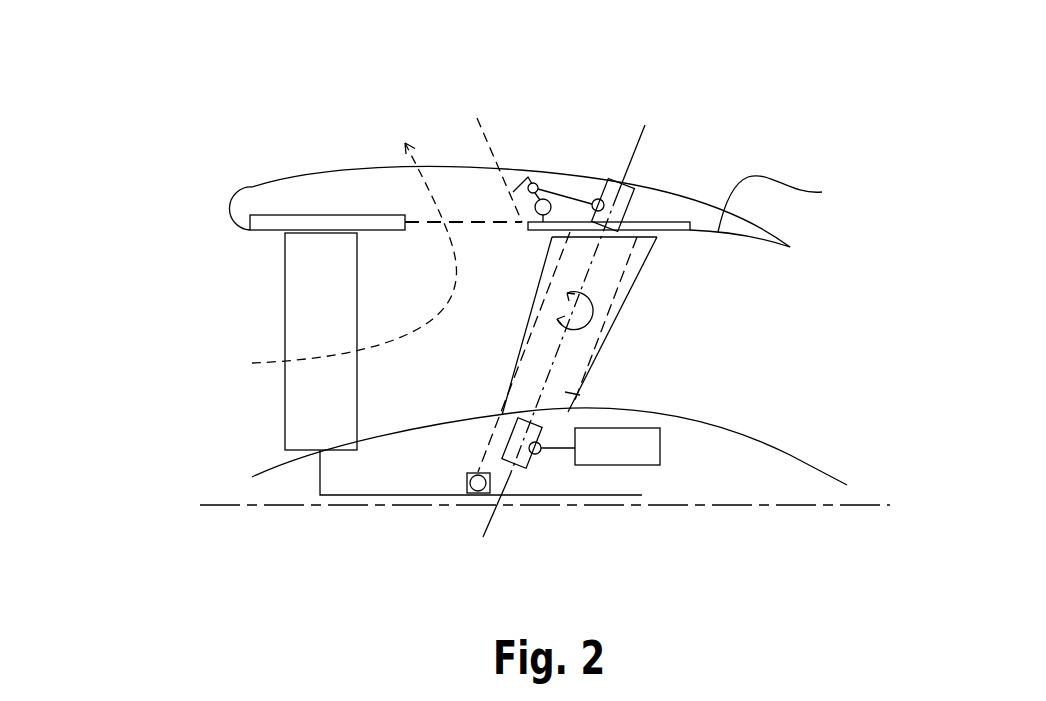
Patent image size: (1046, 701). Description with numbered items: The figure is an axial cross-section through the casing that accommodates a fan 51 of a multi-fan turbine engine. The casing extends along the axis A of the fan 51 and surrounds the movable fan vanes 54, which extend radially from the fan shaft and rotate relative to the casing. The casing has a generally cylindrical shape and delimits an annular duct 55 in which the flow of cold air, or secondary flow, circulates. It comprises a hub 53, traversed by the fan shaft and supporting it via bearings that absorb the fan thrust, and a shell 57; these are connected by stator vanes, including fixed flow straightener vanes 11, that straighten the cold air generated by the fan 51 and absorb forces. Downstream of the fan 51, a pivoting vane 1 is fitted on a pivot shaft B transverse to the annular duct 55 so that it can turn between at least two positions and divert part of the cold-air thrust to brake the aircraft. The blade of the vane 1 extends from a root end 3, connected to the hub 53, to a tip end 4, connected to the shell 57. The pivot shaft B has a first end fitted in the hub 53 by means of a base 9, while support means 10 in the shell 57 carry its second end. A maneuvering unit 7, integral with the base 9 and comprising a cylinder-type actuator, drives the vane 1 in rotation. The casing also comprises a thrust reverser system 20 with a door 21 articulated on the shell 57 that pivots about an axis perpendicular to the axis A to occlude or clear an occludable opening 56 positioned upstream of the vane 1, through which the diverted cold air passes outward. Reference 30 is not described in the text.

The pivoting vane 1 is at (557, 248).
The root end 3 is at (565, 392).
The tip end 4 is at (642, 248).
The maneuvering unit 7 is at (594, 446).
The base 9 is at (522, 465).
The support means 10 is at (627, 208).
The flow straightener vane 11 is at (615, 277).
The thrust reverser system 20 is at (588, 140).
The door 21 is at (477, 120).
The aircraft wing 30 is at (698, 105).
The fan 51 is at (200, 380).
The hub 53 is at (268, 478).
The movable fan vanes 54 is at (318, 275).
The annular duct 55 is at (748, 348).
The occludable opening 56 is at (480, 226).
The shell 57 is at (785, 204).
The axis A is at (868, 503).
The pivot shaft B is at (640, 130).